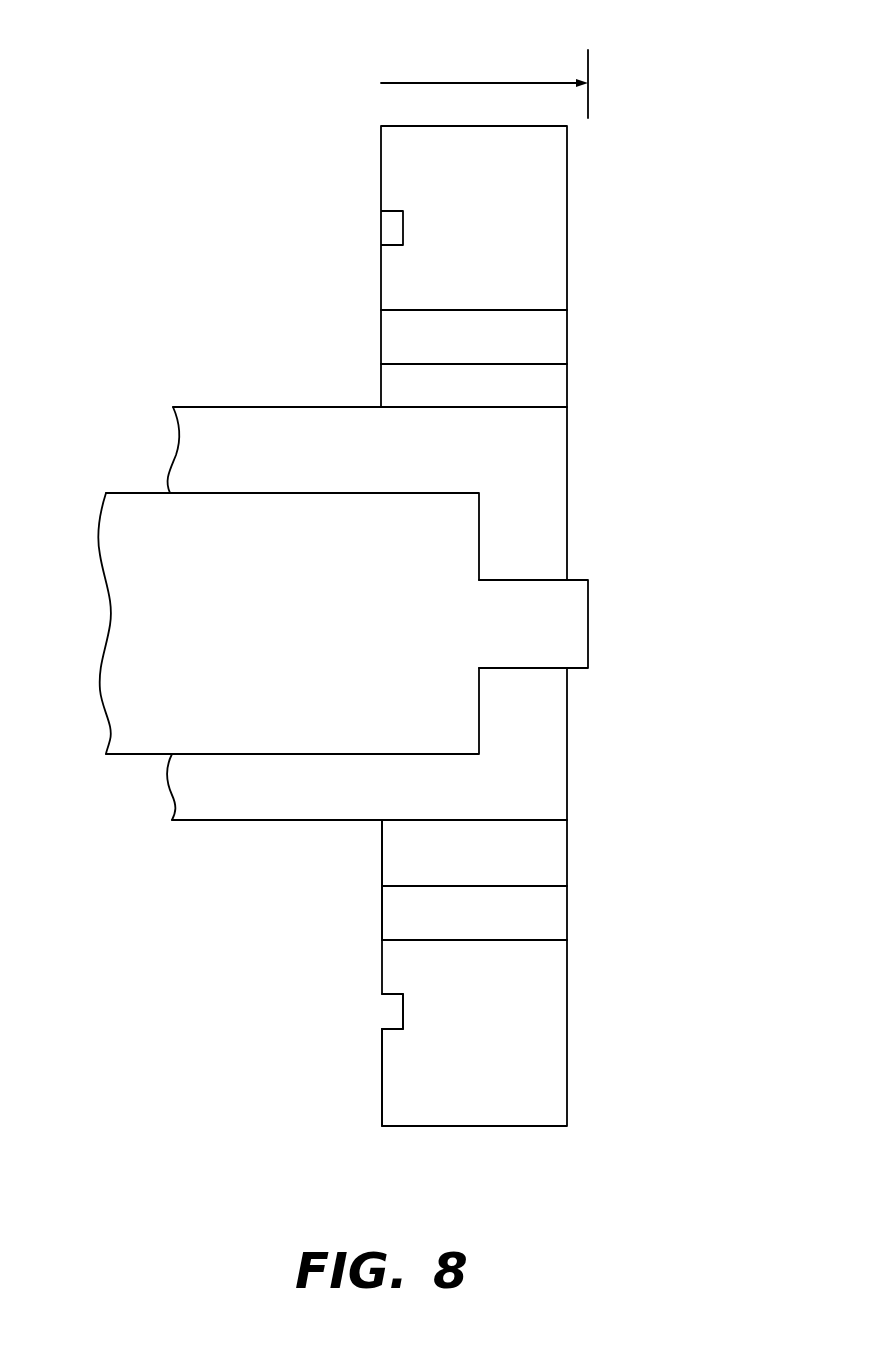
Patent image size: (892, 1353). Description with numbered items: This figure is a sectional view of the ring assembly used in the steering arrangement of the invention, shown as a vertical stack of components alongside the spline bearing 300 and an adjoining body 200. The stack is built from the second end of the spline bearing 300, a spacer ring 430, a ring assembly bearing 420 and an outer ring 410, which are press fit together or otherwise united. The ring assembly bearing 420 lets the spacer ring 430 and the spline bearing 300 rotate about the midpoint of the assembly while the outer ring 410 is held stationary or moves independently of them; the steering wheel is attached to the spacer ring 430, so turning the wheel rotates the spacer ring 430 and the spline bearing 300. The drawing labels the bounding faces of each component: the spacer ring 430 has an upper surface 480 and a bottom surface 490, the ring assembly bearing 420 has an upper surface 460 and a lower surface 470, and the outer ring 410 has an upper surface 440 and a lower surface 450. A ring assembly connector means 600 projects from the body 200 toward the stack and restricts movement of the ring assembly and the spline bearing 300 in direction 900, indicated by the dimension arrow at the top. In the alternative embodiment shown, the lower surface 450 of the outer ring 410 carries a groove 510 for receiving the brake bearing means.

The direction 900 is at (413, 83).
The outer ring 410 is at (555, 263).
The ring assembly bearing 420 is at (555, 342).
The spacer ring 430 is at (555, 386).
The spline bearing 300 is at (216, 420).
The body 200 is at (131, 505).
The ring assembly connector means 600 is at (572, 623).
The upper surface 480 is at (553, 863).
The bottom surface 490 is at (387, 863).
The upper surface 460 is at (553, 908).
The lower surface 470 is at (387, 908).
The upper surface 440 is at (553, 1011).
The groove 510 is at (402, 1011).
The lower surface 450 is at (387, 1077).